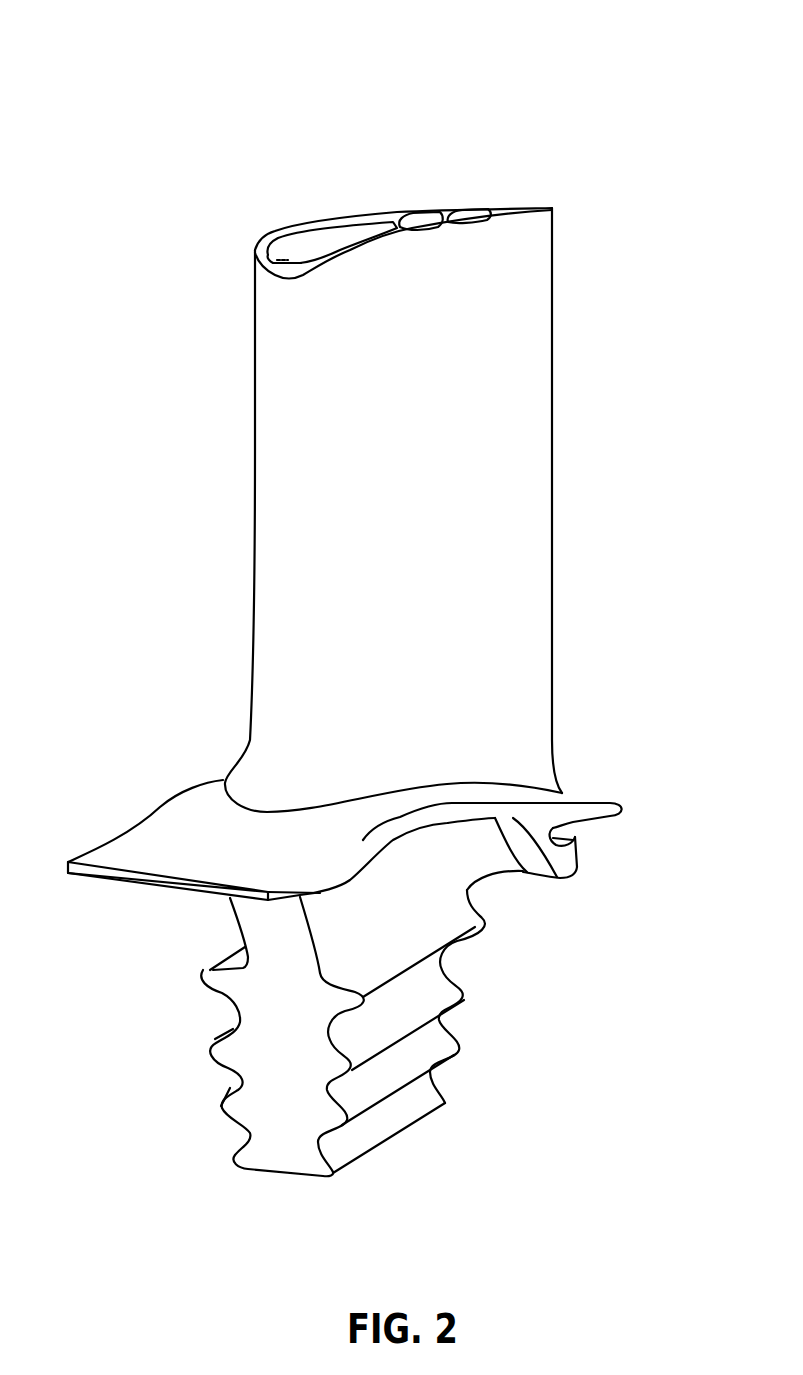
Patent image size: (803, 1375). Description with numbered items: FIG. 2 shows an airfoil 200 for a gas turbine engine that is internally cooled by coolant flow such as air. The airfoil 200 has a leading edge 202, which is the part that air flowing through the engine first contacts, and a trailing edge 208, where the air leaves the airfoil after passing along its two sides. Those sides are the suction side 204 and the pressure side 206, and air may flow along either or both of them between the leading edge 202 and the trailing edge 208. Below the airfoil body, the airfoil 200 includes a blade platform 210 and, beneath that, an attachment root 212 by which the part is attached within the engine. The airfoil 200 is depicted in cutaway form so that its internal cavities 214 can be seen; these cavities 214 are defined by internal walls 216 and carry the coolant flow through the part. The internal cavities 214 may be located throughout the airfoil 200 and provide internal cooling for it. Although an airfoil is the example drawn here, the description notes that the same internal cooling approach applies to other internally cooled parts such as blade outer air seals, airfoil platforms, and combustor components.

The airfoil 200 is at (543, 99).
The leading edge 202 is at (284, 390).
The suction side 204 is at (283, 230).
The pressure side 206 is at (407, 260).
The trailing edge 208 is at (552, 558).
The blade platform 210 is at (147, 851).
The attachment root 212 is at (473, 990).
The internal cavities 214 is at (412, 220).
The internal walls 216 is at (480, 209).